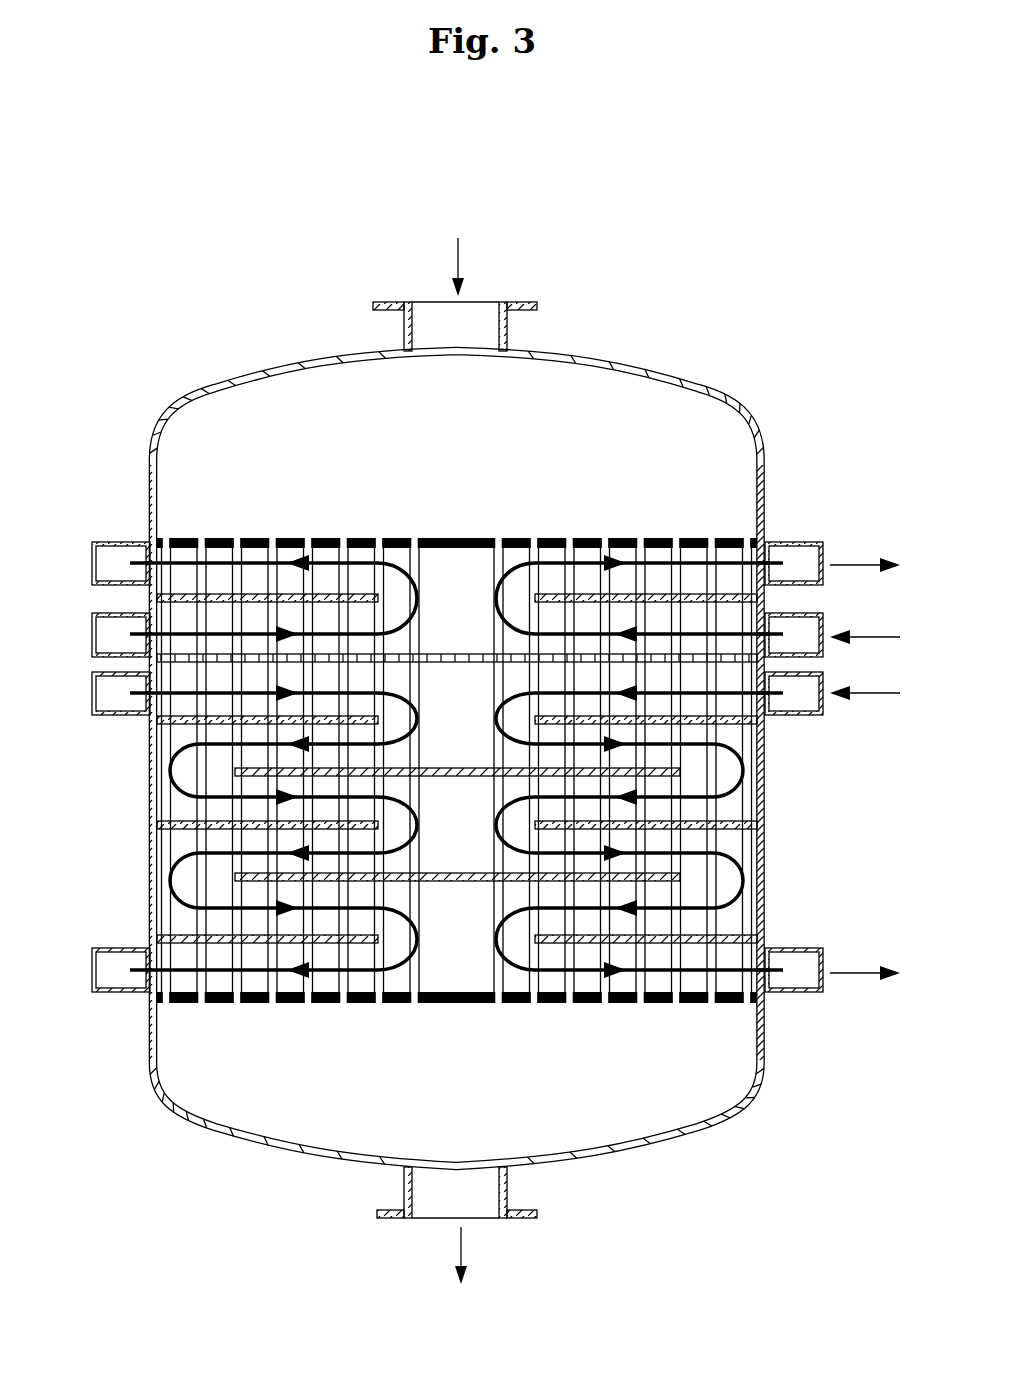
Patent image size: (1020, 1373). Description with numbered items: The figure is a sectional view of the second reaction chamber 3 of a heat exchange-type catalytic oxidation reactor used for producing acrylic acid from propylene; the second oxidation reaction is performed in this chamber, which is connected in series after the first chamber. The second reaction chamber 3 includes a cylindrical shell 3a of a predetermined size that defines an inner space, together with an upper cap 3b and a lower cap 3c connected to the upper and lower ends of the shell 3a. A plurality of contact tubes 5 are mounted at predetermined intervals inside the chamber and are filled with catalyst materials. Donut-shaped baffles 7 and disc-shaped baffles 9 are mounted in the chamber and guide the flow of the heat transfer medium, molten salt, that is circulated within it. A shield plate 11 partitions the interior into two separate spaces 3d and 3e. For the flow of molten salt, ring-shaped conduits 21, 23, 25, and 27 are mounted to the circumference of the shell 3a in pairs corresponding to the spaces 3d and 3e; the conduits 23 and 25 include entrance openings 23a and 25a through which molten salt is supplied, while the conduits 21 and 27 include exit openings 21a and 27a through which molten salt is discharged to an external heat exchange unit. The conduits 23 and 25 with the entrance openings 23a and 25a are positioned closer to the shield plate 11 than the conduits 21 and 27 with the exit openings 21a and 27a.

The second reaction chamber 3 is at (231, 311).
The cylindrical shell 3a is at (149, 794).
The upper cap 3b is at (606, 357).
The lower cap 3c is at (604, 1168).
The space 3d is at (457, 557).
The space 3e is at (457, 1004).
The contact tubes 5 is at (275, 1003).
The donut-shaped baffles 7 is at (156, 722).
The disc-shaped baffles 9 is at (665, 879).
The shield plate 11 is at (93, 677).
The conduit 21 is at (787, 541).
The exit opening 21a is at (815, 556).
The conduit 23 is at (812, 613).
The entrance opening 23a is at (815, 628).
The conduit 25 is at (805, 717).
The entrance opening 25a is at (815, 684).
The conduit 27 is at (806, 993).
The exit opening 27a is at (815, 958).